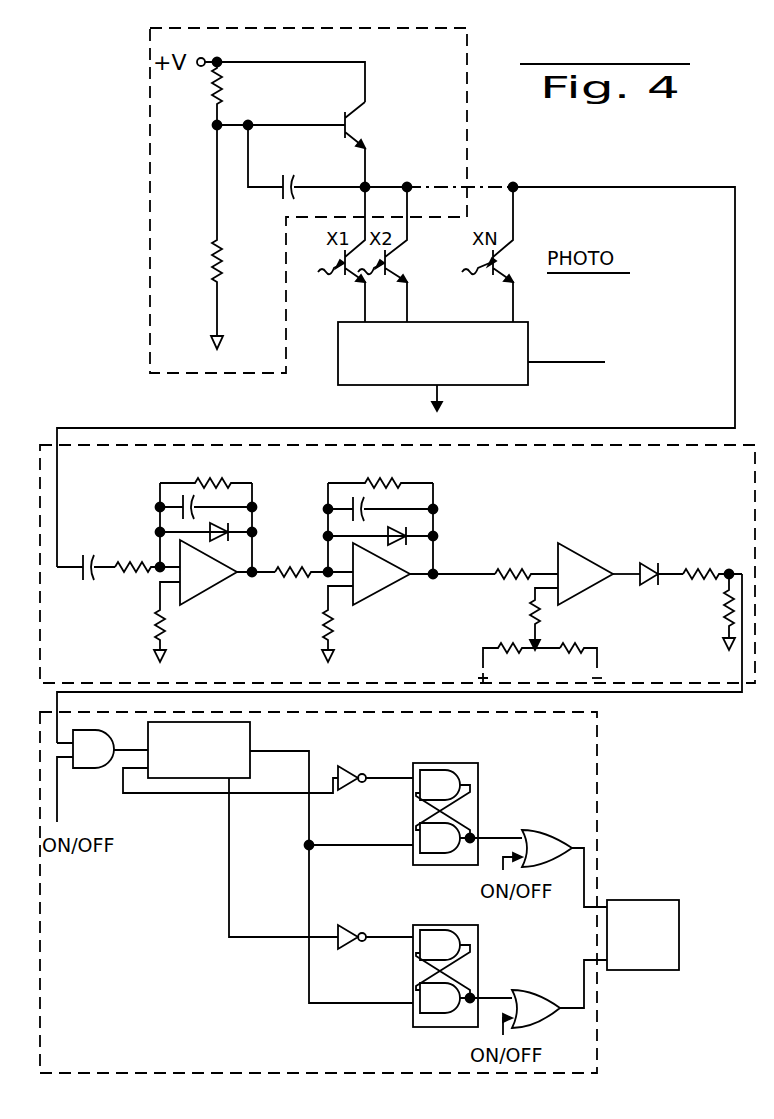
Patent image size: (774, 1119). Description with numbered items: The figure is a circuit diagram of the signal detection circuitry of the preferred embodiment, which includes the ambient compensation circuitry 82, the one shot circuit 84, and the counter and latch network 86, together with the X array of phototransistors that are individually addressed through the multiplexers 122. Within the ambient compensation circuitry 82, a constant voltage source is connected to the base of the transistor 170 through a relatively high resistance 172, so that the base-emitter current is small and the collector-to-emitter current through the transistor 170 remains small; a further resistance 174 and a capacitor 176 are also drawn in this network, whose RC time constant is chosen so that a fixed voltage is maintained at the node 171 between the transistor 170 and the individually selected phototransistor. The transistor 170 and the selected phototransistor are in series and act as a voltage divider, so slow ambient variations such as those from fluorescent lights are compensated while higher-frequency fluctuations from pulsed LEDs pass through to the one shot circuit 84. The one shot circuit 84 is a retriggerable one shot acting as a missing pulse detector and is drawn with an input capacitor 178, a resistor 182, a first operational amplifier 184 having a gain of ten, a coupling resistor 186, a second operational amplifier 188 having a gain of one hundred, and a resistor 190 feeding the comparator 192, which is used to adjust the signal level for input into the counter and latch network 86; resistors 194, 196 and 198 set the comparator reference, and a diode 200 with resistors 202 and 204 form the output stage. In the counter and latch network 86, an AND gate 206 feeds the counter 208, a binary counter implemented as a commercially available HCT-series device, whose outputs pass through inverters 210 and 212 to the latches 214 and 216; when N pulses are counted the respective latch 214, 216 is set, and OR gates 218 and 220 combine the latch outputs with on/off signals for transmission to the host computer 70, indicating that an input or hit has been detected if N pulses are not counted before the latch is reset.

The host computer 70 is at (658, 913).
The ambient compensation circuitry 82 is at (148, 196).
The one shot circuit 84 is at (115, 445).
The counter and latch network 86 is at (150, 1074).
The multiplexers 122 is at (518, 334).
The transistor 170 is at (360, 122).
The node 171 is at (368, 183).
The resistance 172 is at (210, 107).
The resistor 174 is at (210, 268).
The capacitor 176 is at (282, 174).
The capacitor 178 is at (88, 550).
The resistor 182 is at (150, 626).
The first operational amplifier 184 is at (210, 585).
The resistor 186 is at (297, 576).
The second operational amplifier 188 is at (373, 585).
The resistor 190 is at (513, 560).
The comparator 192 is at (572, 548).
The resistor 194 is at (540, 625).
The potentiometer resistor 196 is at (582, 655).
The potentiometer resistor 198 is at (506, 646).
The diode 200 is at (648, 562).
The resistor 202 is at (700, 565).
The resistor 204 is at (718, 616).
The AND gate 206 is at (92, 762).
The counter 208 is at (236, 743).
The inverter 210 is at (358, 775).
The inverter 212 is at (353, 925).
The latch 214 is at (468, 765).
The latch 216 is at (452, 925).
The OR gate 218 is at (548, 838).
The OR gate 220 is at (535, 993).